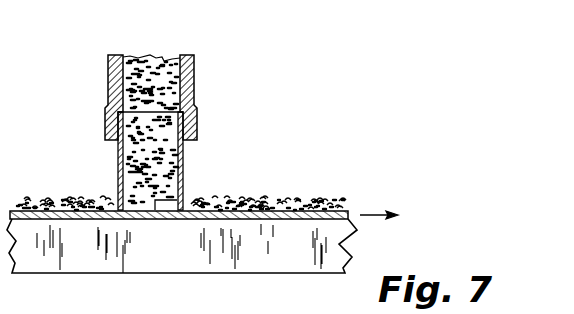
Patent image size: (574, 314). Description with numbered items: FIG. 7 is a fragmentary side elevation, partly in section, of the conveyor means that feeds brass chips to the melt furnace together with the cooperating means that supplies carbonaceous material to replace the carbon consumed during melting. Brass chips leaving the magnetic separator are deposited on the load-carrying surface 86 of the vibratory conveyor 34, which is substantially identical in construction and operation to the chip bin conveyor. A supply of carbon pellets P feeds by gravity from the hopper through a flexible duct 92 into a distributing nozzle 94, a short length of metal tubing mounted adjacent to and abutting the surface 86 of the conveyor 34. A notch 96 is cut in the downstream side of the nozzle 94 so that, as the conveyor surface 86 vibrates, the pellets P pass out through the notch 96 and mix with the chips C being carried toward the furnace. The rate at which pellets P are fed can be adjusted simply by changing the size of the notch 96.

The flexible duct 92 is at (195, 93).
The distributing nozzle 94 is at (185, 166).
The notch 96 is at (168, 206).
The load-carrying surface 86 is at (172, 221).
The conveyor 34 is at (202, 274).
The carbon pellets P is at (164, 60).
The coating material C is at (45, 196).